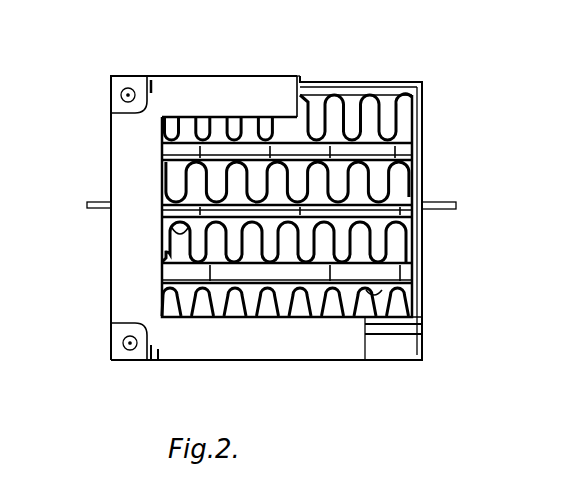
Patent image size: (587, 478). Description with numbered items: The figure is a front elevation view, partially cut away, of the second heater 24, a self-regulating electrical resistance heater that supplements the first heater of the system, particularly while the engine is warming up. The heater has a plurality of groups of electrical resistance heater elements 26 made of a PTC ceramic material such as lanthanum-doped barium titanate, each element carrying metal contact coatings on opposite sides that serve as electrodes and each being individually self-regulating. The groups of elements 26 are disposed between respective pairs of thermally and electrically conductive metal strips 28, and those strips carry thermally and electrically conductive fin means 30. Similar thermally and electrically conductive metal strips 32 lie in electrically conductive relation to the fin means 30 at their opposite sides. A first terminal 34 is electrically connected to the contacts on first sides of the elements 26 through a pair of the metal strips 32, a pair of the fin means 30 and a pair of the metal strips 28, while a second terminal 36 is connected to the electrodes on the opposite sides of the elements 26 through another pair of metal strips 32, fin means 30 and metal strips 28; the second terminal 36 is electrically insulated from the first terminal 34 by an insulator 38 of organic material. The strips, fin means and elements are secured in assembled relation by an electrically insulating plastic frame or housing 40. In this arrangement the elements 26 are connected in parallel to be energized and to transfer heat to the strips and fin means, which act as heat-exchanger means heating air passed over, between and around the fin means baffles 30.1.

The second heater 24 is at (292, 70).
The electrical resistance heater elements 26 is at (203, 137).
The metal strips 28 is at (412, 101).
The fin means 30 is at (404, 92).
The fin means baffles 30.1 is at (175, 248).
The metal strips 32 is at (357, 92).
The first terminal 34 is at (456, 205).
The second terminal 36 is at (90, 203).
The insulator 38 is at (421, 318).
The frame or housing 40 is at (111, 160).